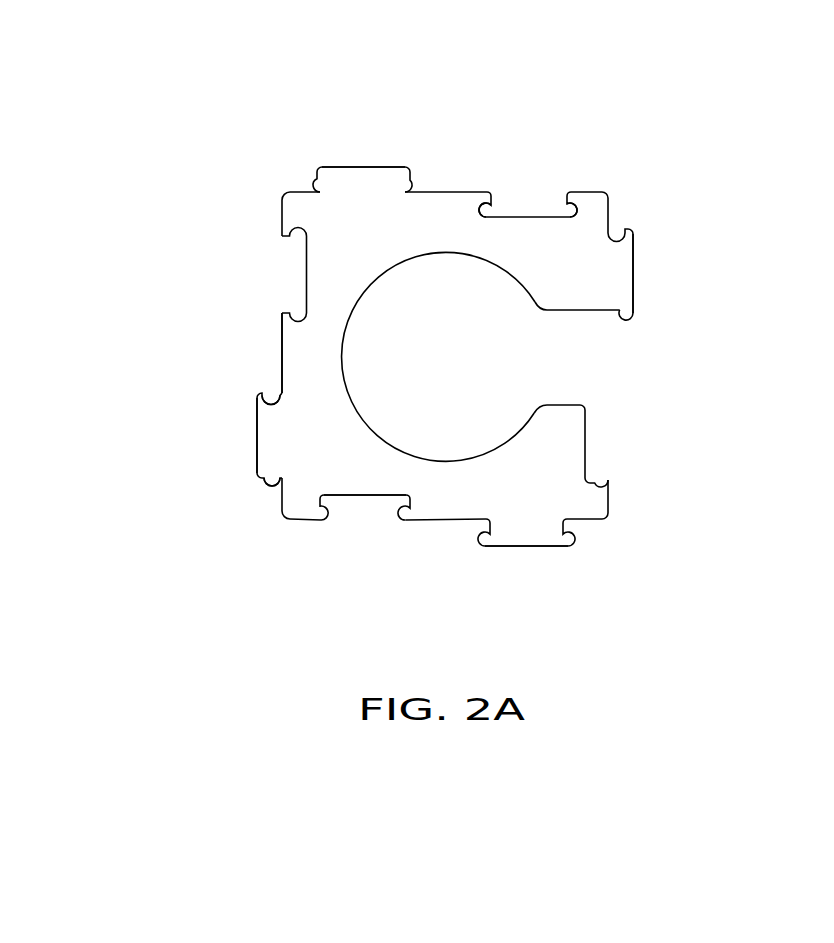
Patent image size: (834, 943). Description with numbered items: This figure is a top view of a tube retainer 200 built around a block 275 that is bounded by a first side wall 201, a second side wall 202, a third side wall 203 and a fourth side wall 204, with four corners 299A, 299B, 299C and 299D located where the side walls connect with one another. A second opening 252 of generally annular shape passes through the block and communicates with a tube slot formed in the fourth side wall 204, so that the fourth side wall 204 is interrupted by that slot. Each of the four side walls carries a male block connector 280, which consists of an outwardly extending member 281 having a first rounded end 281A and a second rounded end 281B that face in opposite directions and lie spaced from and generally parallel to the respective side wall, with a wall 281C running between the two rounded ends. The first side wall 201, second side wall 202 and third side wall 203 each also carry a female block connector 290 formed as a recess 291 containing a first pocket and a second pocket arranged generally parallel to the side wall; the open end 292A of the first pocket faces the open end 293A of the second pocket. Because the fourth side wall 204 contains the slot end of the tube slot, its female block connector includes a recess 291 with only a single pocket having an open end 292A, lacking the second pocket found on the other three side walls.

The tube retainer 200 is at (248, 57).
The first side wall 201 is at (432, 520).
The second side wall 202 is at (282, 493).
The third side wall 203 is at (470, 192).
The fourth side wall 204 is at (610, 491).
The second opening 252 is at (477, 369).
The block 275 is at (308, 367).
The male block connector 280 is at (373, 150).
The outwardly extending member 281 is at (386, 178).
The first rounded end 281A is at (268, 398).
The second rounded end 281B is at (258, 479).
The wall 281C is at (363, 167).
The female block connector 290 is at (525, 212).
The recess 291 is at (370, 497).
The open end of the first pocket 292A is at (567, 218).
The open end of the second pocket 293A is at (490, 218).
The corner 299A is at (282, 517).
The corner 299B is at (282, 198).
The corner 299C is at (607, 195).
The corner 299D is at (608, 517).